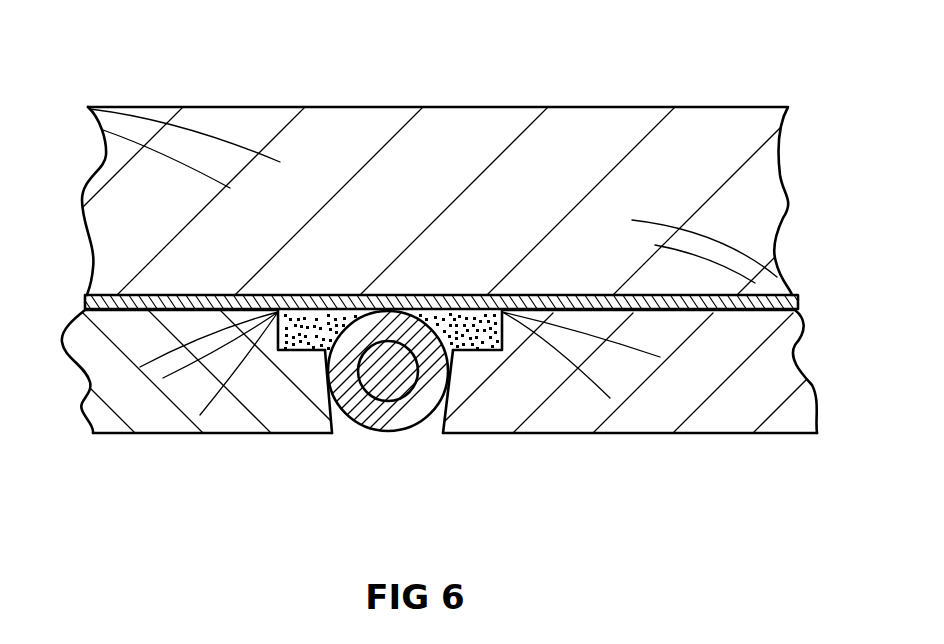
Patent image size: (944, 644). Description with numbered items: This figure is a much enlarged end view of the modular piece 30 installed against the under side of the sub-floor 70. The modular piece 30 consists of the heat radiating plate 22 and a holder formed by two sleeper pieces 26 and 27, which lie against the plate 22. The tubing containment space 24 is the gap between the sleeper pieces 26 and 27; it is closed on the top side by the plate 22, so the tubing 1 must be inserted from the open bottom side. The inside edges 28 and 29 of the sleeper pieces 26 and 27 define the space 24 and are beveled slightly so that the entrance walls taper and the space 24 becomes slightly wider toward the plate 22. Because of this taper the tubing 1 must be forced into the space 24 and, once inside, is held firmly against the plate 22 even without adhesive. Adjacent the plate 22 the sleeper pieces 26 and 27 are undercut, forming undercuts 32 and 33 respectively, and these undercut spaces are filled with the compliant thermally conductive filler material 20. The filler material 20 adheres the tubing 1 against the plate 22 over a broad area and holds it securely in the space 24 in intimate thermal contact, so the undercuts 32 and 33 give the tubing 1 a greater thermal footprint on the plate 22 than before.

The sub-floor 70 is at (690, 113).
The plate 22 is at (393, 297).
The undercut 32 is at (298, 310).
The undercut 33 is at (484, 296).
The filler material 20 is at (298, 327).
The sleeper piece 26 is at (110, 362).
The sleeper piece 27 is at (755, 370).
The edge 28 is at (325, 380).
The edge 29 is at (504, 314).
The modular piece 30 is at (142, 452).
The tubing 1 is at (405, 426).
The tubing containment space 24 is at (432, 447).